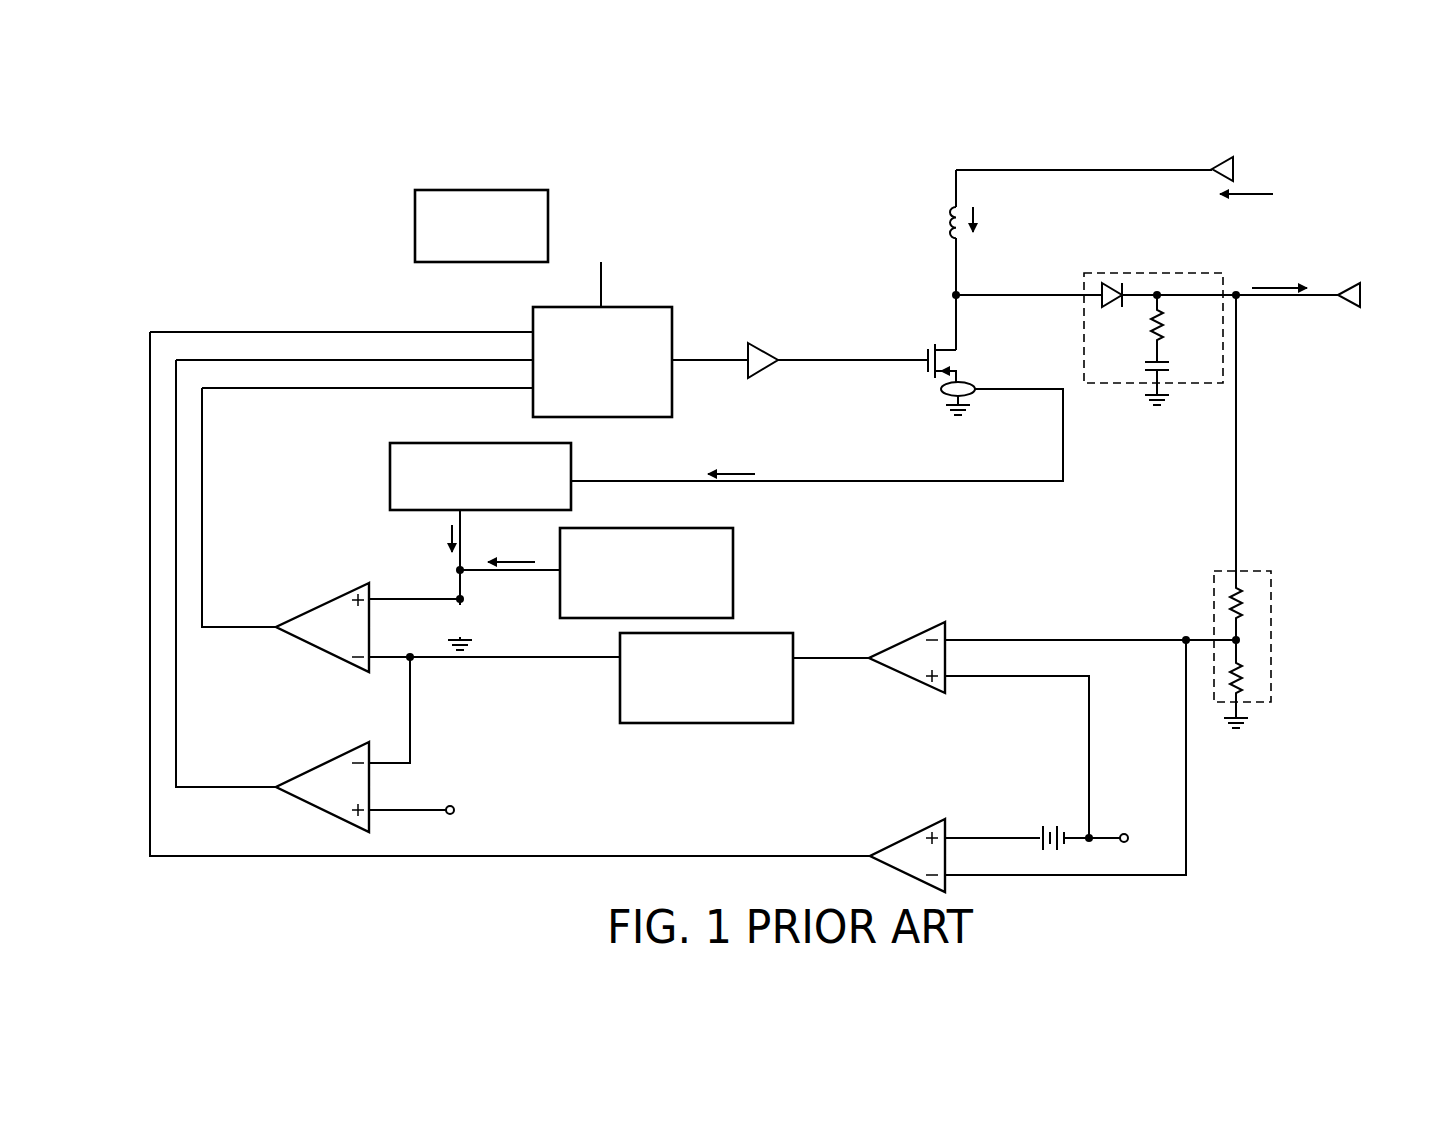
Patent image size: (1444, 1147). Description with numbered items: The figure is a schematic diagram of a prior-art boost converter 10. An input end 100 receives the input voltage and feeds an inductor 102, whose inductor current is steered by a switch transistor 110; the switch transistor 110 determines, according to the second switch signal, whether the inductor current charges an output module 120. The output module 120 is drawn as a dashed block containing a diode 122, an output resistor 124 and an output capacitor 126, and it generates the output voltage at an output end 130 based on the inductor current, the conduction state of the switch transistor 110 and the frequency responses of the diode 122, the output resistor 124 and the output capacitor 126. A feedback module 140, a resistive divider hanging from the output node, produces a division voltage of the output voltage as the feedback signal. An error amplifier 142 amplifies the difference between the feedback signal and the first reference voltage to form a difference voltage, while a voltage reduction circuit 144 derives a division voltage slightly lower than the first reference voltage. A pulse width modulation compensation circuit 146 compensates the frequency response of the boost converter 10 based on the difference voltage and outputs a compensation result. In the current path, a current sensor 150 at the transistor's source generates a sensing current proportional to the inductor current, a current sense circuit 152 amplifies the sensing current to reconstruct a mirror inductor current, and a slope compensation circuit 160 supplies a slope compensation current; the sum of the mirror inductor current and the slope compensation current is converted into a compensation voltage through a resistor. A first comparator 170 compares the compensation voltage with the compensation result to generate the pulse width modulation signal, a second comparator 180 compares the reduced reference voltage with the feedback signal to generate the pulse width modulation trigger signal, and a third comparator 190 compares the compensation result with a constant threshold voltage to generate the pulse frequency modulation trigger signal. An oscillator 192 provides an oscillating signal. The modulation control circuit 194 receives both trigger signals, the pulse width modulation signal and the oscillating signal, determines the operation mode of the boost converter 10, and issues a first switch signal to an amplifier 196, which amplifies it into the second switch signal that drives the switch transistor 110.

The boost converter 10 is at (1340, 160).
The input end 100 is at (1219, 158).
The inductor 102 is at (945, 222).
The switch transistor 110 is at (930, 372).
The output module 120 is at (1183, 271).
The diode 122 is at (1115, 306).
The output resistor 124 is at (1166, 325).
The output capacitor 126 is at (1166, 365).
The output end 130 is at (1348, 285).
The feedback module 140 is at (1250, 570).
The error amplifier 142 is at (909, 637).
The voltage reduction circuit 144 is at (1052, 826).
The pulse width modulation (PWM) compensation circuit 146 is at (766, 632).
The current sensor 150 is at (975, 383).
The current sense circuit 152 is at (485, 441).
The slope compensation circuit 160 is at (676, 526).
The first comparator 170 is at (323, 601).
The second comparator 180 is at (910, 833).
The third comparator 190 is at (323, 761).
The oscillator 192 is at (518, 189).
The modulation control circuit 194 is at (658, 306).
The amplifier 196 is at (765, 349).